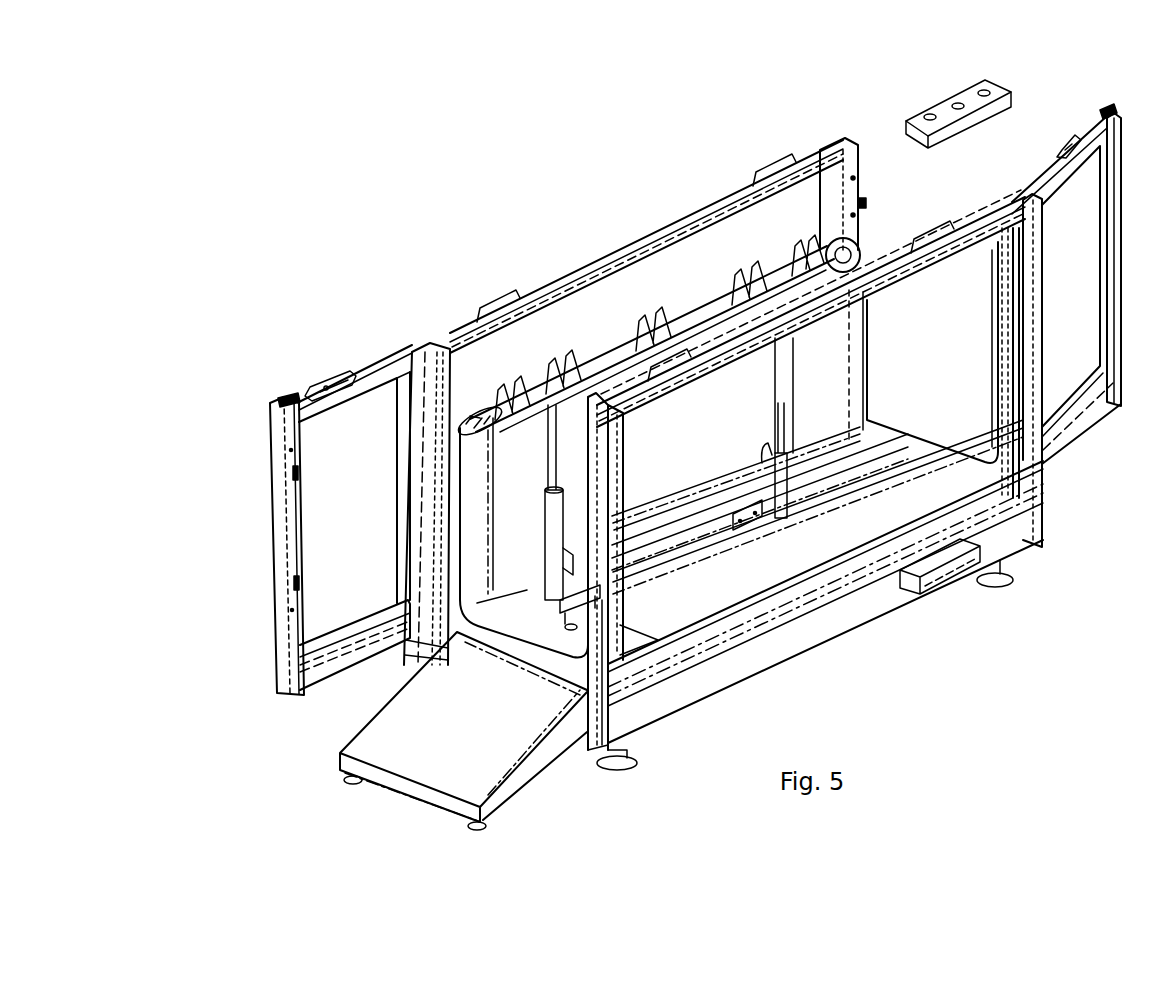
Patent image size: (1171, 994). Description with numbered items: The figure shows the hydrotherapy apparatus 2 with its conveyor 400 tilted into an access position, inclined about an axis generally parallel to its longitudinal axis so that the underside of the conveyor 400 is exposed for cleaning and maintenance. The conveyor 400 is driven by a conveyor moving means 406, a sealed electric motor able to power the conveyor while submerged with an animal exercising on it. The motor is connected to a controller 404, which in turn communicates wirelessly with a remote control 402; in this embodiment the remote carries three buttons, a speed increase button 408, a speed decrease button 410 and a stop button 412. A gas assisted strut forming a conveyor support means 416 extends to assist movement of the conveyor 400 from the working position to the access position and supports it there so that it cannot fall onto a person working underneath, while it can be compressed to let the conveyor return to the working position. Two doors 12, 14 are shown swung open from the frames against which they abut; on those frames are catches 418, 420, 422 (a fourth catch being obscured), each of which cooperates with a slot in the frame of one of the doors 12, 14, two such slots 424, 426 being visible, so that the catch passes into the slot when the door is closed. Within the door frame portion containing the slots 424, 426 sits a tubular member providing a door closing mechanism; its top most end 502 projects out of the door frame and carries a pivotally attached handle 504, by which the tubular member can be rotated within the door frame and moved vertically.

The hydrotherapy apparatus 2 is at (424, 283).
The door 12 is at (328, 535).
The door 14 is at (1055, 294).
The conveyor 400 is at (580, 335).
The remote control 402 is at (1005, 86).
The controller 404 is at (920, 588).
The conveyor moving means 406 is at (862, 240).
The speed increase button 408 is at (971, 85).
The speed decrease button 410 is at (958, 110).
The stop button 412 is at (924, 125).
The conveyor support means 416 is at (557, 552).
The catch 418 is at (587, 633).
The catch 420 is at (566, 470).
The catch 422 is at (865, 205).
The slot 424 is at (289, 474).
The slot 426 is at (287, 633).
The top most end 502 is at (283, 398).
The handle 504 is at (327, 378).